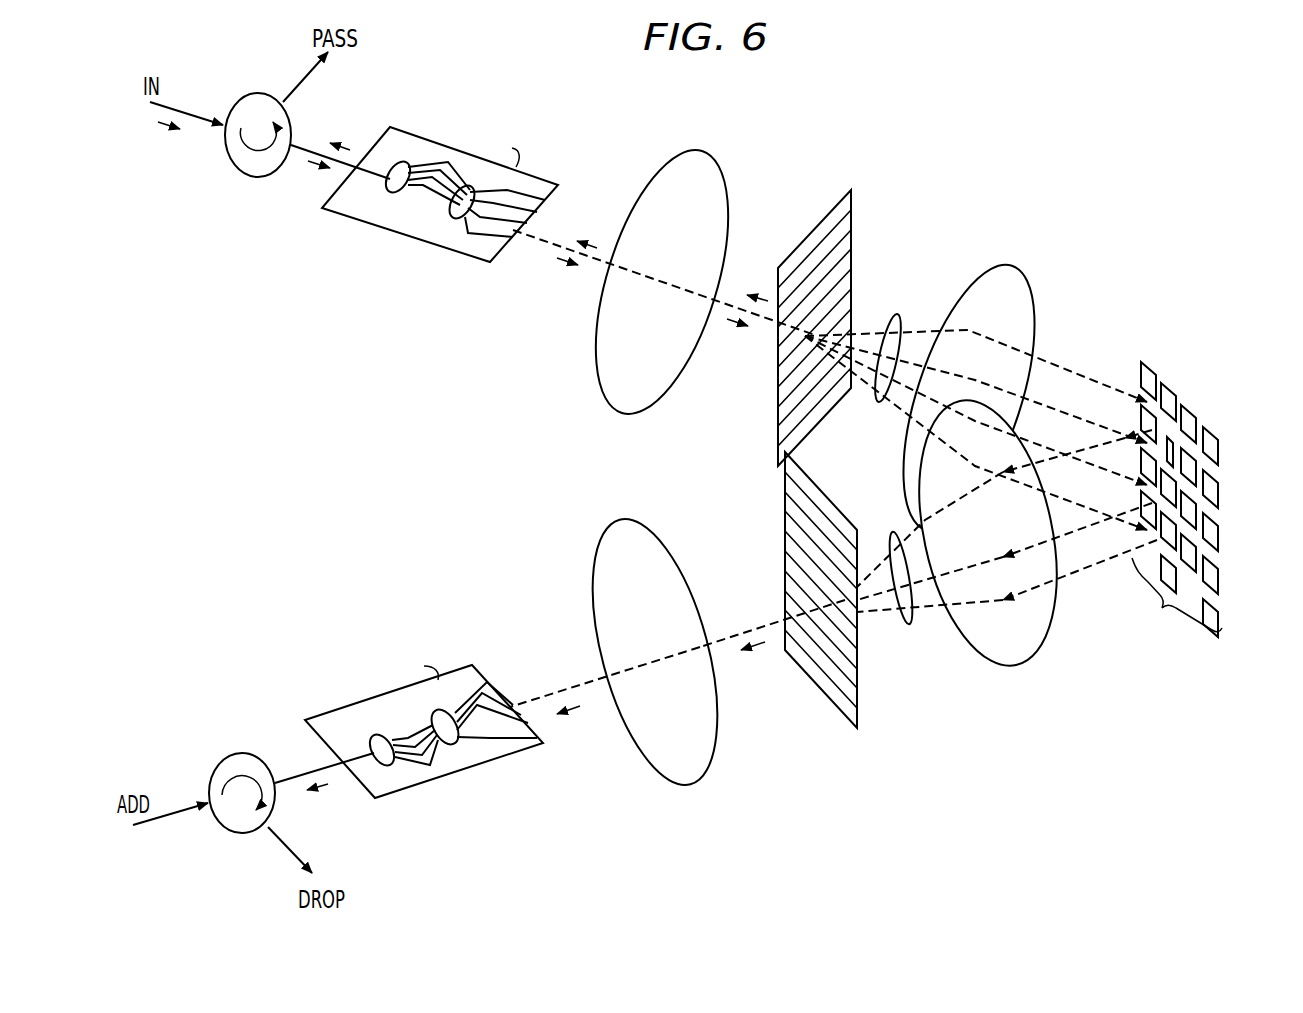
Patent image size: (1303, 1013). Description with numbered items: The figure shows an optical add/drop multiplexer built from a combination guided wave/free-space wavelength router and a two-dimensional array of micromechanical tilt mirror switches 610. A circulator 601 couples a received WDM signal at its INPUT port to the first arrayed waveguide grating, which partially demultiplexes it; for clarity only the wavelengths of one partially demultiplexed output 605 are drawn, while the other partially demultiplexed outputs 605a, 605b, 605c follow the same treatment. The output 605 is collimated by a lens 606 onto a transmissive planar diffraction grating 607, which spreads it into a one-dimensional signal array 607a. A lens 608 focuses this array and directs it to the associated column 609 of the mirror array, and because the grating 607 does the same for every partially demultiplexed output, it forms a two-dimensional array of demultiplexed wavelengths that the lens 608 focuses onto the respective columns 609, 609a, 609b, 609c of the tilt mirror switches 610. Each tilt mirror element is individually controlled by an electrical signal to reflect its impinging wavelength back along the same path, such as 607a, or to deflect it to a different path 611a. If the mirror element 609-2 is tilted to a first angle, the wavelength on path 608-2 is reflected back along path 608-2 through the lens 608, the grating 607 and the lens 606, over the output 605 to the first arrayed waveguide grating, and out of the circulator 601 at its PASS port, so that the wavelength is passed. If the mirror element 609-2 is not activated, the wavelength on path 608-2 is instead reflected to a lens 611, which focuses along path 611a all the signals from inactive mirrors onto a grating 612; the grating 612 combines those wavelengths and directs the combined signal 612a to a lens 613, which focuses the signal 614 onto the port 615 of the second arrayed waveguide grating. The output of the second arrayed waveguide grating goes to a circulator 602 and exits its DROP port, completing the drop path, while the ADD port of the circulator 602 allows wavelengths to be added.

The circulator 601 is at (258, 178).
The circulator 602 is at (236, 753).
The partially demultiplexed output 605 is at (552, 244).
The partially demultiplexed output 605a is at (510, 250).
The partially demultiplexed output 605b is at (533, 222).
The partially demultiplexed output 605c is at (552, 205).
The lens 606 is at (703, 150).
The transmissive planar diffraction grating 607 is at (851, 202).
The one-dimensional signal array 607a is at (897, 316).
The lens 608 is at (1010, 265).
The path 608-2 is at (1081, 415).
The column 609 is at (1168, 387).
The column 609a is at (1150, 366).
The column 609b is at (1189, 410).
The column 609c is at (1218, 434).
The mirror element 609-2 is at (1176, 455).
The two-dimensional array of micromechanical tilt mirror switches 610 is at (1161, 610).
The lens 611 is at (1018, 667).
The path 611a is at (908, 626).
The grating 612 is at (858, 703).
The combined signal 612a is at (733, 635).
The lens 613 is at (688, 786).
The signal 614 is at (590, 690).
The port 615 is at (515, 706).